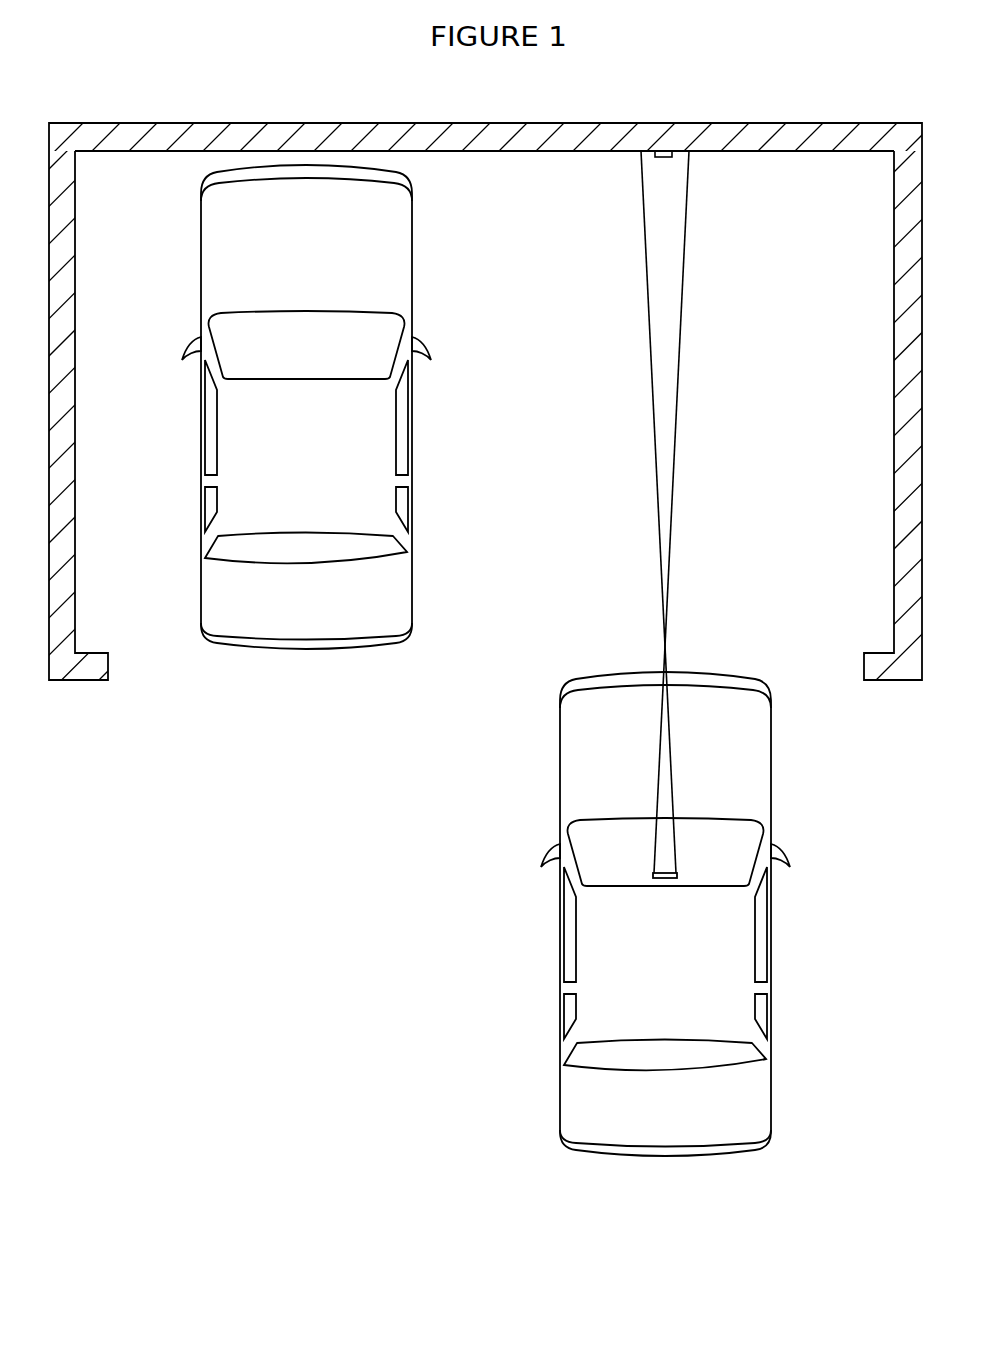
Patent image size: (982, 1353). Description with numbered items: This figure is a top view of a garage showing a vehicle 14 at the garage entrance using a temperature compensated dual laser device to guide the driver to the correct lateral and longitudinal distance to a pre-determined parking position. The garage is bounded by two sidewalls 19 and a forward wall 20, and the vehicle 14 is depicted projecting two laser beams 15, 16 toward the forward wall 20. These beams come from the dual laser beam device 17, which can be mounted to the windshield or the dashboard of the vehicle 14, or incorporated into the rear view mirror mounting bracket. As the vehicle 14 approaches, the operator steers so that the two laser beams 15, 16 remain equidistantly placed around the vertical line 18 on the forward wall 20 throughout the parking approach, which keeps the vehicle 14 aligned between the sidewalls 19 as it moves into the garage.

The vehicle 14 is at (680, 921).
The laser beam 15 is at (646, 767).
The laser beam 16 is at (684, 774).
The dual laser beam device 17 is at (631, 877).
The vertical line 18 is at (658, 171).
The sidewalls 19 is at (491, 424).
The forward wall 20 is at (752, 141).